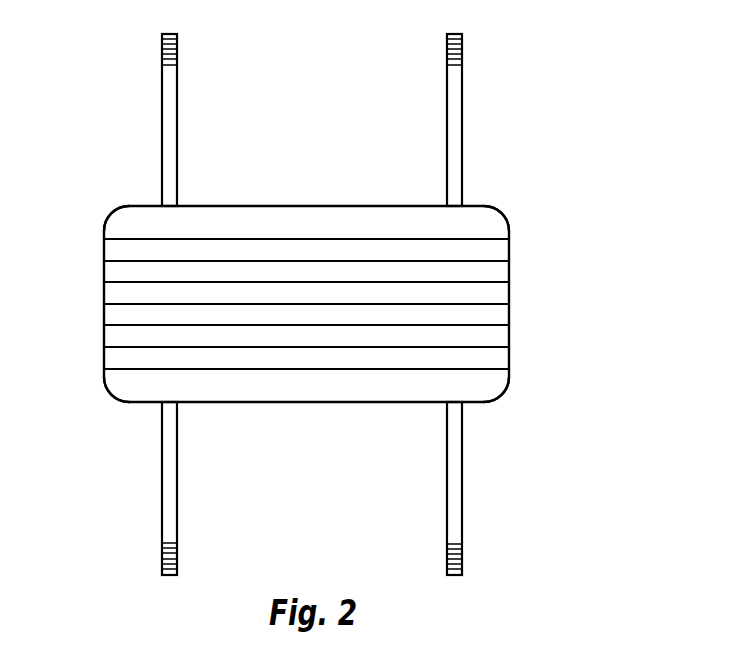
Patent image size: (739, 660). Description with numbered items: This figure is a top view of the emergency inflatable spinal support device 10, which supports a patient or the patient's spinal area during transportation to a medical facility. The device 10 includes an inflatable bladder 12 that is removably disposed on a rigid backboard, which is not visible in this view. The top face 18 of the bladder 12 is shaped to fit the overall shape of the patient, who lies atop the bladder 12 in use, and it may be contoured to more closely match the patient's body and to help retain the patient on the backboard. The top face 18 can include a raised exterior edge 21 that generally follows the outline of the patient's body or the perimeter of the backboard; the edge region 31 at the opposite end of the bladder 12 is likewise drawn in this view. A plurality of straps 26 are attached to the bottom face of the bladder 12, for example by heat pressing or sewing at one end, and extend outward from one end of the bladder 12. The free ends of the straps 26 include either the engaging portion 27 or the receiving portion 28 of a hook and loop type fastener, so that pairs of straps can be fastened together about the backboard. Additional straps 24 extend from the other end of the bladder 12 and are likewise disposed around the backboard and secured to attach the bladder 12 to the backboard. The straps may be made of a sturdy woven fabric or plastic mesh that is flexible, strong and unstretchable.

The emergency inflatable spinal support device 10 is at (546, 150).
The inflatable bladder 12 is at (121, 337).
The top face 18 is at (306, 304).
The raised exterior edge 21 is at (500, 227).
The straps 24 is at (168, 518).
The straps 26 is at (168, 88).
The engaging portion 27 is at (162, 43).
The receiving portion 28 is at (173, 562).
The lower rounded edge 31 is at (493, 385).